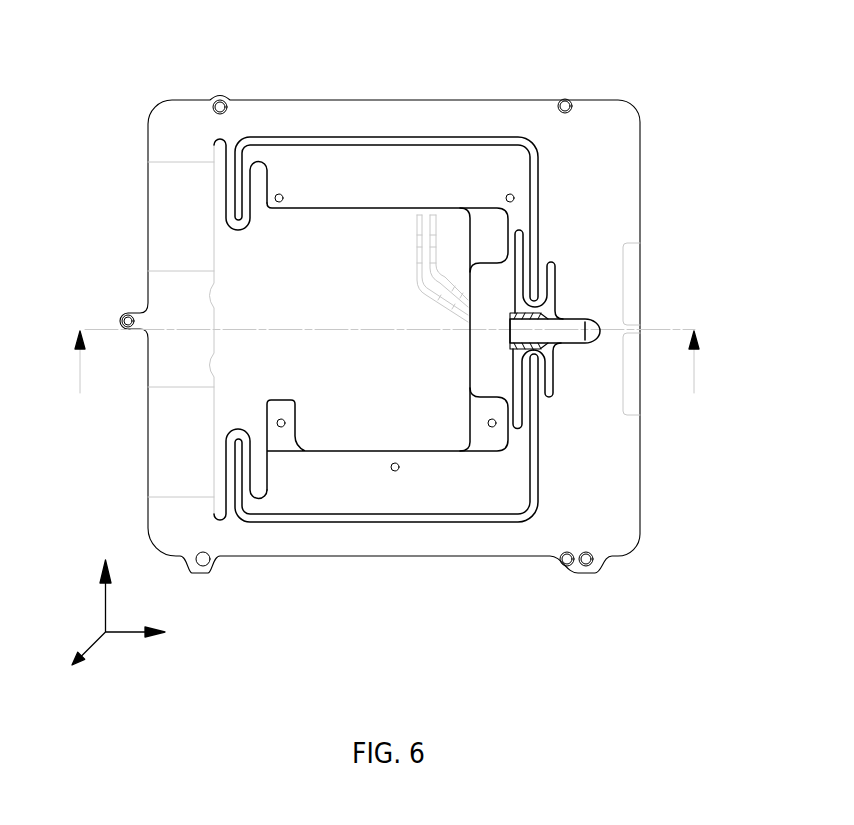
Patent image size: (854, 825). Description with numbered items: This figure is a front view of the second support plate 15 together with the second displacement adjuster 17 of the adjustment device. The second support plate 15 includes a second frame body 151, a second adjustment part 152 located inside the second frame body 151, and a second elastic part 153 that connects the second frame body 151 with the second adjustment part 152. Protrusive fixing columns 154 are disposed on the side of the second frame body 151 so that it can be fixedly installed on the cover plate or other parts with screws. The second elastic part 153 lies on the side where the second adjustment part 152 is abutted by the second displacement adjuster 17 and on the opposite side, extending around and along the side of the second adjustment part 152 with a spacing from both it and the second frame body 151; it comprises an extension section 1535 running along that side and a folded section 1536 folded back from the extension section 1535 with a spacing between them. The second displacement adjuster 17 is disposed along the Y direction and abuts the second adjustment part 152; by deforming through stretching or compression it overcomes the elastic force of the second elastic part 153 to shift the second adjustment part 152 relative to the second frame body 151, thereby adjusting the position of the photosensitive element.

The heat dissipation module 15 is at (399, 84).
The base plate 151 is at (582, 210).
The heat conducting plate 152 is at (440, 173).
The flow channel 153 is at (233, 178).
The fixing hole 154 is at (572, 102).
The connector 17 is at (571, 328).
The first groove 1535 is at (528, 393).
The second groove 1536 is at (543, 375).